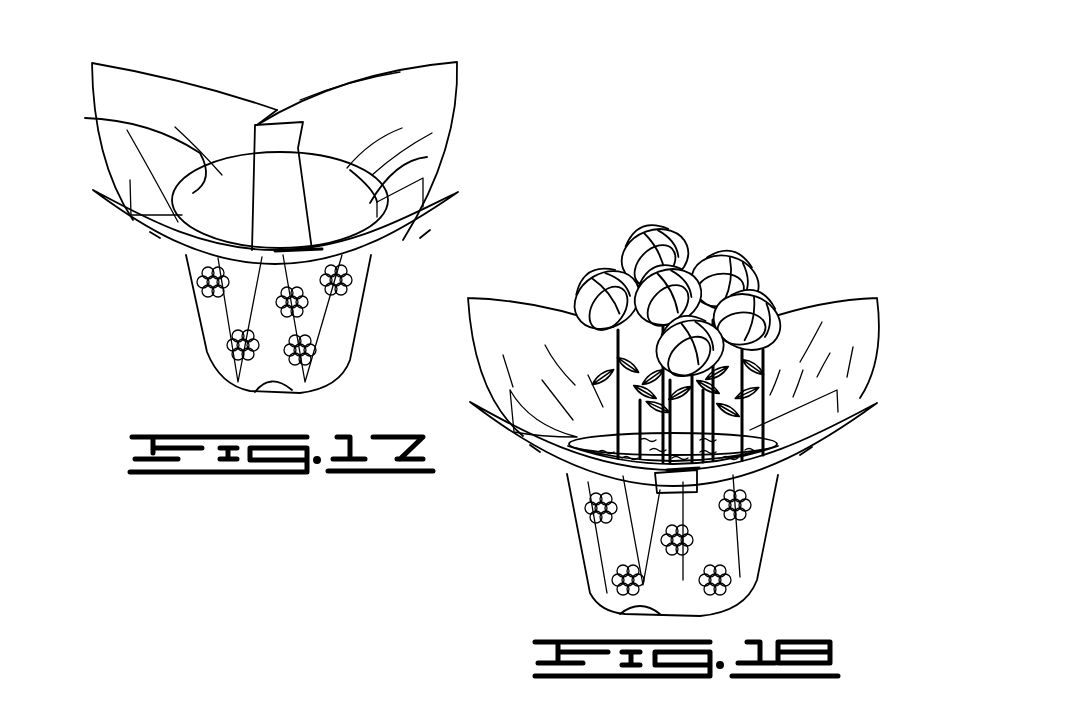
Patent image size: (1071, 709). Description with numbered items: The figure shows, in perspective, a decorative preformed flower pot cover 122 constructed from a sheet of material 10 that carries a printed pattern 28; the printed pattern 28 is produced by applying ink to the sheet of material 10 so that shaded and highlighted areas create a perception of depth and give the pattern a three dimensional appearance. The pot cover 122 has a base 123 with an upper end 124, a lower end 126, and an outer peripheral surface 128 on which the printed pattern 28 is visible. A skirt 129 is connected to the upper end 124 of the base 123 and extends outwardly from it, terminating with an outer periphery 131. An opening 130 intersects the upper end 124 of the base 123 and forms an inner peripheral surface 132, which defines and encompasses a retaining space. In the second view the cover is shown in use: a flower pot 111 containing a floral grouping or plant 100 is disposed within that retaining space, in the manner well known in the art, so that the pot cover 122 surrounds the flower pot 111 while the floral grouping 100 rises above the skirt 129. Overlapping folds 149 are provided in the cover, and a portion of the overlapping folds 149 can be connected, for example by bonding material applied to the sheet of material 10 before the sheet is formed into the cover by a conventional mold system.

In FIG. 17, the sheet of material 10 is at (288, 218).
In FIG. 18, the sheet of material 10 is at (690, 420).
In FIG. 17, the printed pattern 28 is at (308, 320).
In FIG. 18, the printed pattern 28 is at (705, 546).
In FIG. 18, the floral grouping or plant 100 is at (765, 248).
In FIG. 18, the flower pot 111 is at (603, 425).
In FIG. 17, the decorative preformed flower pot cover 122 is at (138, 278).
In FIG. 18, the decorative preformed flower pot cover 122 is at (813, 500).
In FIG. 17, the base 123 is at (355, 338).
In FIG. 18, the base 123 is at (763, 565).
In FIG. 17, the upper end 124 is at (427, 157).
In FIG. 17, the lower end 126 is at (338, 368).
In FIG. 18, the lower end 126 is at (728, 612).
In FIG. 17, the outer peripheral surface 128 is at (252, 325).
In FIG. 18, the outer peripheral surface 128 is at (590, 537).
In FIG. 17, the skirt 129 is at (417, 92).
In FIG. 18, the skirt 129 is at (841, 318).
In FIG. 17, the opening 130 is at (240, 183).
In FIG. 17, the outer periphery 131 is at (370, 73).
In FIG. 18, the outer periphery 131 is at (810, 307).
In FIG. 17, the inner peripheral surface 132 is at (120, 122).
In FIG. 17, the overlapping folds 149 is at (278, 383).
In FIG. 18, the overlapping folds 149 is at (605, 558).